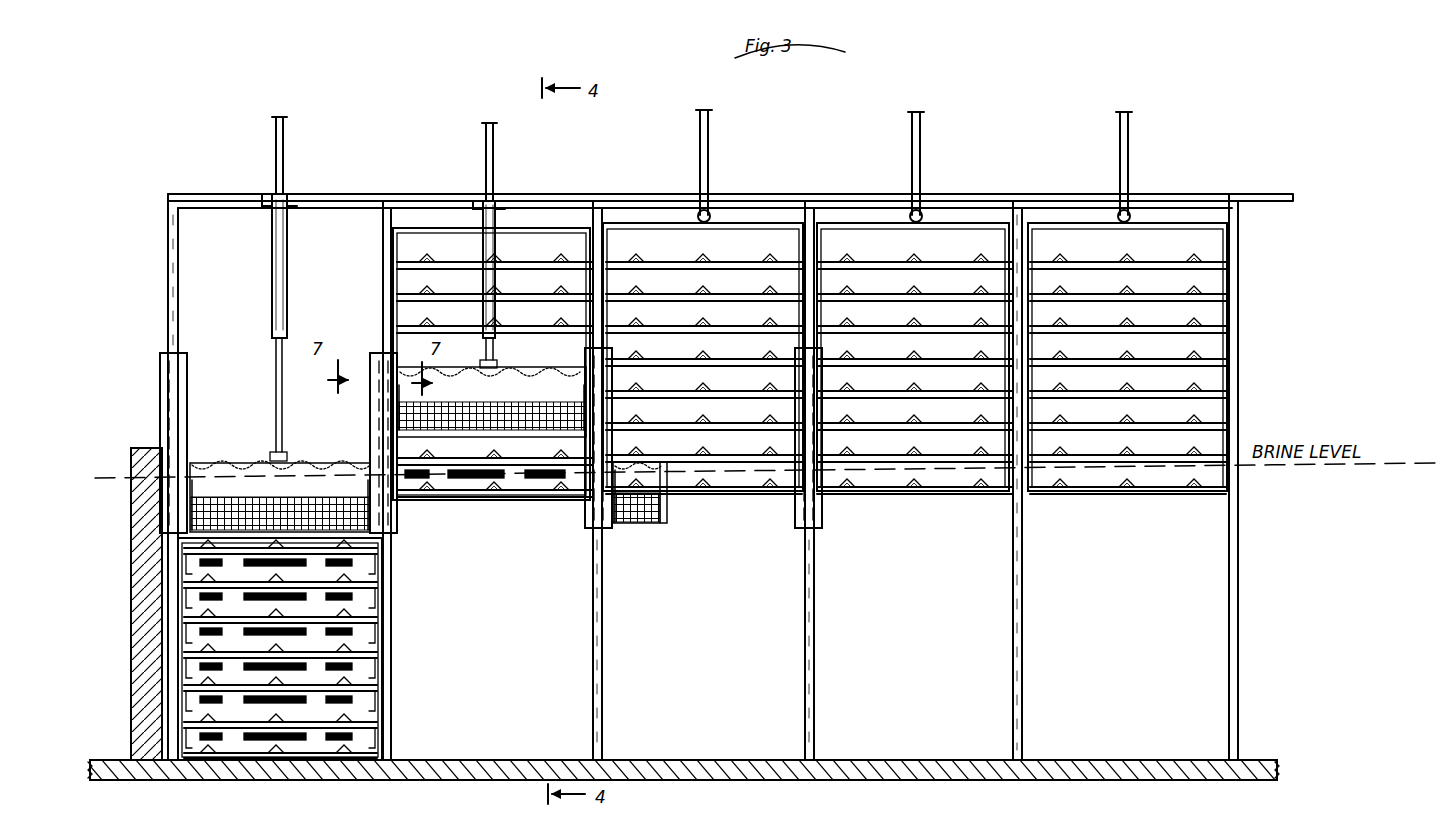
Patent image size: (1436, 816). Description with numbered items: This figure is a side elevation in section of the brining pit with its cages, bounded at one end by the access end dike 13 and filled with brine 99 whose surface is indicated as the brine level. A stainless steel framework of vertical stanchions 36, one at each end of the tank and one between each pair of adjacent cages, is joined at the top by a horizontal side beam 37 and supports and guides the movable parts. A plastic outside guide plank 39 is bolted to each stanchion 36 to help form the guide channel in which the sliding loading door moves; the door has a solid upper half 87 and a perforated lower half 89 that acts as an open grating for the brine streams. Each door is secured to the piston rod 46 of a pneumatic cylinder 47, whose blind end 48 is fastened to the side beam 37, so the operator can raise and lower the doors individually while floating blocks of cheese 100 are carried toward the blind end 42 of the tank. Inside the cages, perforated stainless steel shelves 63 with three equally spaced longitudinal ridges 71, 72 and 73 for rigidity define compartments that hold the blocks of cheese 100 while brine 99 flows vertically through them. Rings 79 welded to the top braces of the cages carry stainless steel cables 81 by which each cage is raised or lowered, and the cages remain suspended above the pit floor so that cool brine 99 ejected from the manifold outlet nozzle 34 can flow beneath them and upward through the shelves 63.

The access end dike 13 is at (136, 448).
The outlet nozzle 34 is at (800, 372).
The vertical stanchion 36 is at (168, 285).
The horizontal side beam 37 is at (1246, 192).
The outside guide plank 39 is at (190, 368).
The blind end 42 is at (250, 468).
The piston rod 46 is at (276, 384).
The pneumatic cylinder 47 is at (272, 262).
The blind end of pneumatic cylinder 48 is at (270, 198).
The shelf 63 is at (198, 602).
The longitudinal ridge 71 is at (212, 762).
The longitudinal ridge 72 is at (278, 762).
The longitudinal ridge 73 is at (348, 762).
The ring 79 is at (712, 213).
The stainless steel cable 81 is at (272, 127).
The upper half of loading door 87 is at (325, 470).
The lower half of loading door 89 is at (480, 425).
The brine 99 is at (1345, 518).
The block of cheese 100 is at (528, 482).